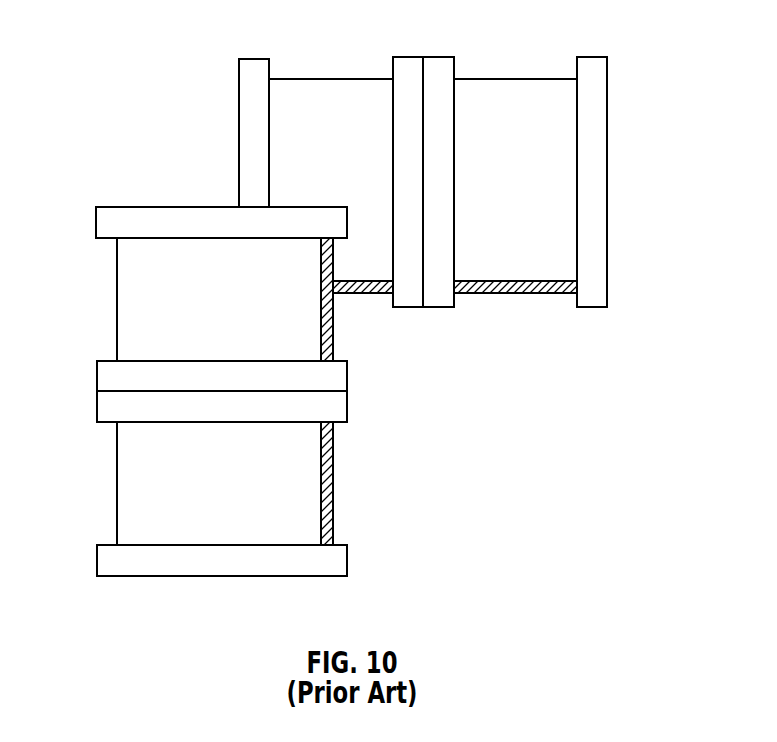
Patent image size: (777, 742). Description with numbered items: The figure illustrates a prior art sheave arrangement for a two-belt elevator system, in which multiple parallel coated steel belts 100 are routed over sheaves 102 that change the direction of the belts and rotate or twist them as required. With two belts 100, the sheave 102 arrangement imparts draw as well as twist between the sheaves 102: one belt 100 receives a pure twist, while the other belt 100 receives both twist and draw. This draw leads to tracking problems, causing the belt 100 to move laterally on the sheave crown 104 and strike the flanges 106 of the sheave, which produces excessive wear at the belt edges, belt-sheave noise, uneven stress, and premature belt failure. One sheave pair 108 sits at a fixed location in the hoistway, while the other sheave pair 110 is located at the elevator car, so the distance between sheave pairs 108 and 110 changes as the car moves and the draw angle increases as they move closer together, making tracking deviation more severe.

The belt 100 is at (327, 324).
The sheave 102 is at (316, 97).
The sheave crown 104 is at (507, 280).
The flange 106 is at (239, 110).
The sheave pair 108 is at (607, 102).
The sheave pair 110 is at (330, 578).